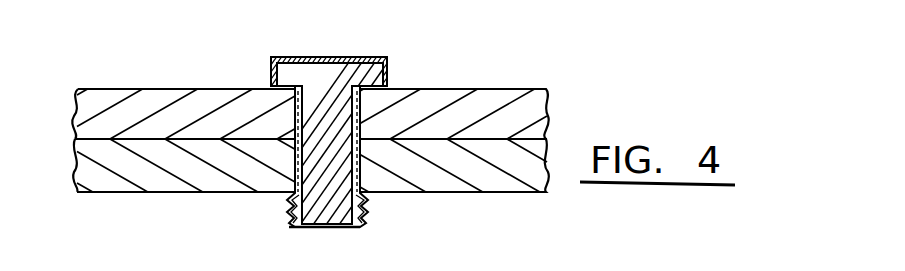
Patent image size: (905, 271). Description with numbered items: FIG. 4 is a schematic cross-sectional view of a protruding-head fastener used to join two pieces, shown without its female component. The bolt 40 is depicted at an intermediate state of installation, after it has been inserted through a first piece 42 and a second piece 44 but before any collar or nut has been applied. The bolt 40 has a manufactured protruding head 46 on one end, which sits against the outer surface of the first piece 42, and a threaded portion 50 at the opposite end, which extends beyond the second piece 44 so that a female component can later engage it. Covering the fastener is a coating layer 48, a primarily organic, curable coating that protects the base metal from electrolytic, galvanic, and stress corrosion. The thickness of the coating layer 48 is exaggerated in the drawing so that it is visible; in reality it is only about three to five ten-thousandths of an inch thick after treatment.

The bolt 40 is at (364, 144).
The first piece 42 is at (160, 97).
The second piece 44 is at (133, 175).
The protruding head 46 is at (318, 67).
The coating layer 48 is at (342, 58).
The threaded portion 50 is at (315, 230).